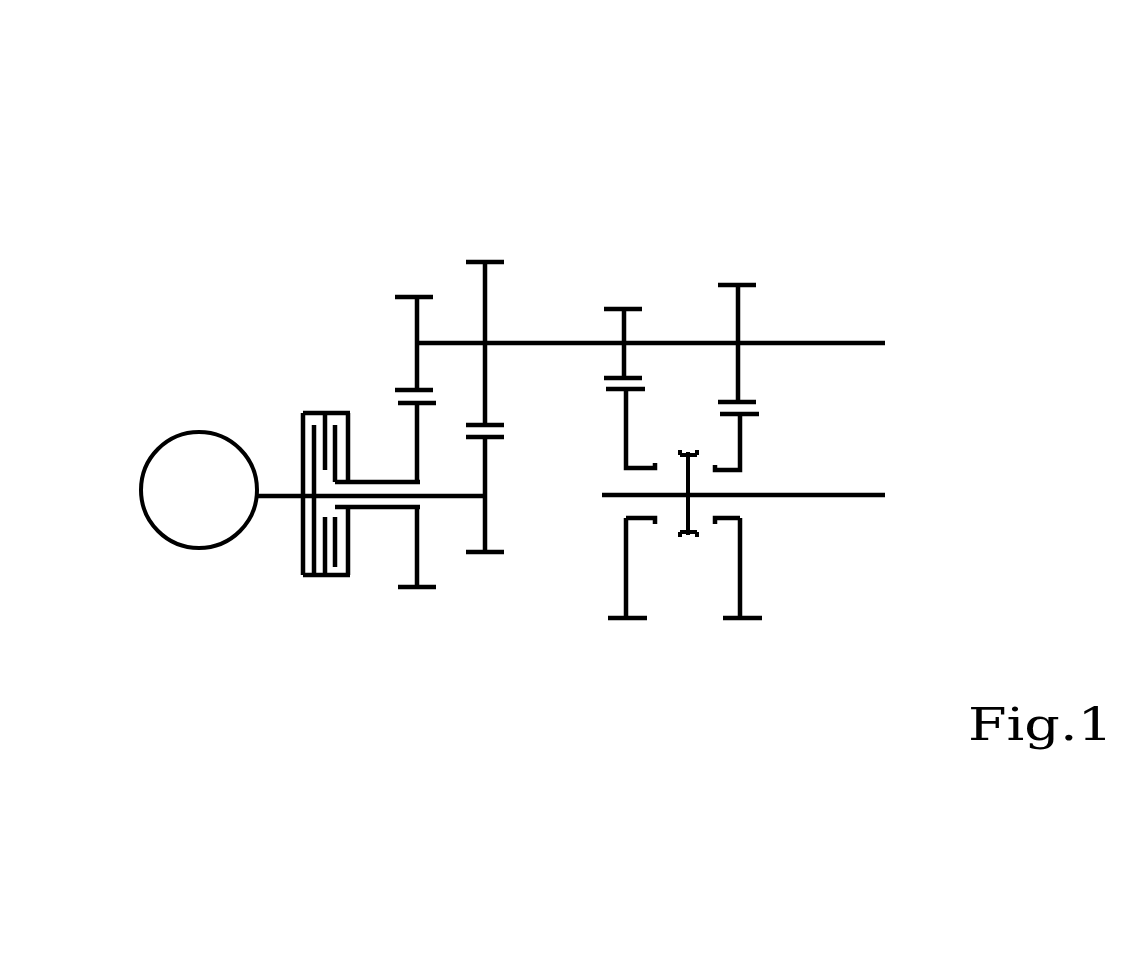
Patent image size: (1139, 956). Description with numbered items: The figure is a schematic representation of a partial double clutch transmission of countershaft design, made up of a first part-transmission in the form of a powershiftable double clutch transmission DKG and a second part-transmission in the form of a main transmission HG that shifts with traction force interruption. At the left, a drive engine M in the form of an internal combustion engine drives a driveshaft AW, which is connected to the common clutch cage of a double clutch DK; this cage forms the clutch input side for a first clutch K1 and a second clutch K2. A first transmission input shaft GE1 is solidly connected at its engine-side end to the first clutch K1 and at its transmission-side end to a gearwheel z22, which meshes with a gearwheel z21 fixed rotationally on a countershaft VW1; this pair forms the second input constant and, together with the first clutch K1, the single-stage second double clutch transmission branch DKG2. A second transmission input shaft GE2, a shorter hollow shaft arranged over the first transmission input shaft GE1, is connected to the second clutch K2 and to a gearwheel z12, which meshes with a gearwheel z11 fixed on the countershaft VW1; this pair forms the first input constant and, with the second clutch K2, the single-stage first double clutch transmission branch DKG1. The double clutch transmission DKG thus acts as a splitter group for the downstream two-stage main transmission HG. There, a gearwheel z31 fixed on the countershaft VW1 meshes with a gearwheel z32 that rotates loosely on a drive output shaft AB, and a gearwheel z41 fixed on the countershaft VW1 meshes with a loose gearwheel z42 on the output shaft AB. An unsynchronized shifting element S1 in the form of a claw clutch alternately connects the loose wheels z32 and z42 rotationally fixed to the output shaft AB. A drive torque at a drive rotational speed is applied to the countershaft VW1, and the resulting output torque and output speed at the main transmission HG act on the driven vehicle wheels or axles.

The drive engine M is at (193, 548).
The driveshaft AW is at (278, 490).
The double clutch transmission DKG is at (376, 359).
The double clutch DK is at (303, 577).
The first double clutch transmission branch DKG1 is at (346, 384).
The second double clutch transmission branch DKG2 is at (425, 384).
The first clutch K1 is at (322, 577).
The second clutch K2 is at (333, 577).
The first transmission input shaft GE1 is at (367, 493).
The second transmission input shaft GE2 is at (388, 482).
The gearwheel z11 is at (424, 295).
The gearwheel z12 is at (403, 589).
The gearwheel z21 is at (493, 262).
The gearwheel z22 is at (478, 555).
The main transmission HG is at (702, 382).
The countershaft VW1 is at (793, 341).
The gearwheel z31 is at (633, 307).
The gearwheel z32 is at (618, 620).
The gearwheel z41 is at (745, 283).
The gearwheel z42 is at (735, 620).
The shifting element S1 is at (690, 540).
The drive output shaft AB is at (793, 497).